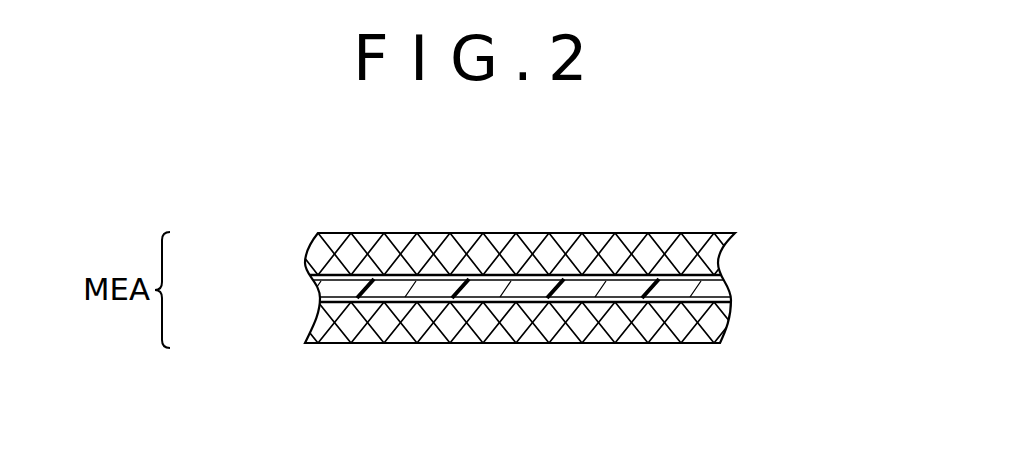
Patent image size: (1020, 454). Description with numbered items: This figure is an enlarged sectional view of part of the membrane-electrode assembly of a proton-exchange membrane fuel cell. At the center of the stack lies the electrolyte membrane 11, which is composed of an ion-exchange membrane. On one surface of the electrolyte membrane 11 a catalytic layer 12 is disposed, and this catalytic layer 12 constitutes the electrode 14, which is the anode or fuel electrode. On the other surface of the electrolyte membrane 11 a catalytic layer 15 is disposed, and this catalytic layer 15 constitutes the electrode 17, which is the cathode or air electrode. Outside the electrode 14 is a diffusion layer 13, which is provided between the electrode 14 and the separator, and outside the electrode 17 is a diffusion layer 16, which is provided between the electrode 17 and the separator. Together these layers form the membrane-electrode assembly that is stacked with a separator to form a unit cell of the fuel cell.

The electrolyte membrane 11 is at (333, 288).
The catalytic layer 12 is at (327, 300).
The diffusion layer 13 is at (348, 325).
The electrode 14 is at (461, 323).
The catalytic layer 15 is at (323, 272).
The diffusion layer 16 is at (322, 240).
The electrode 17 is at (461, 253).